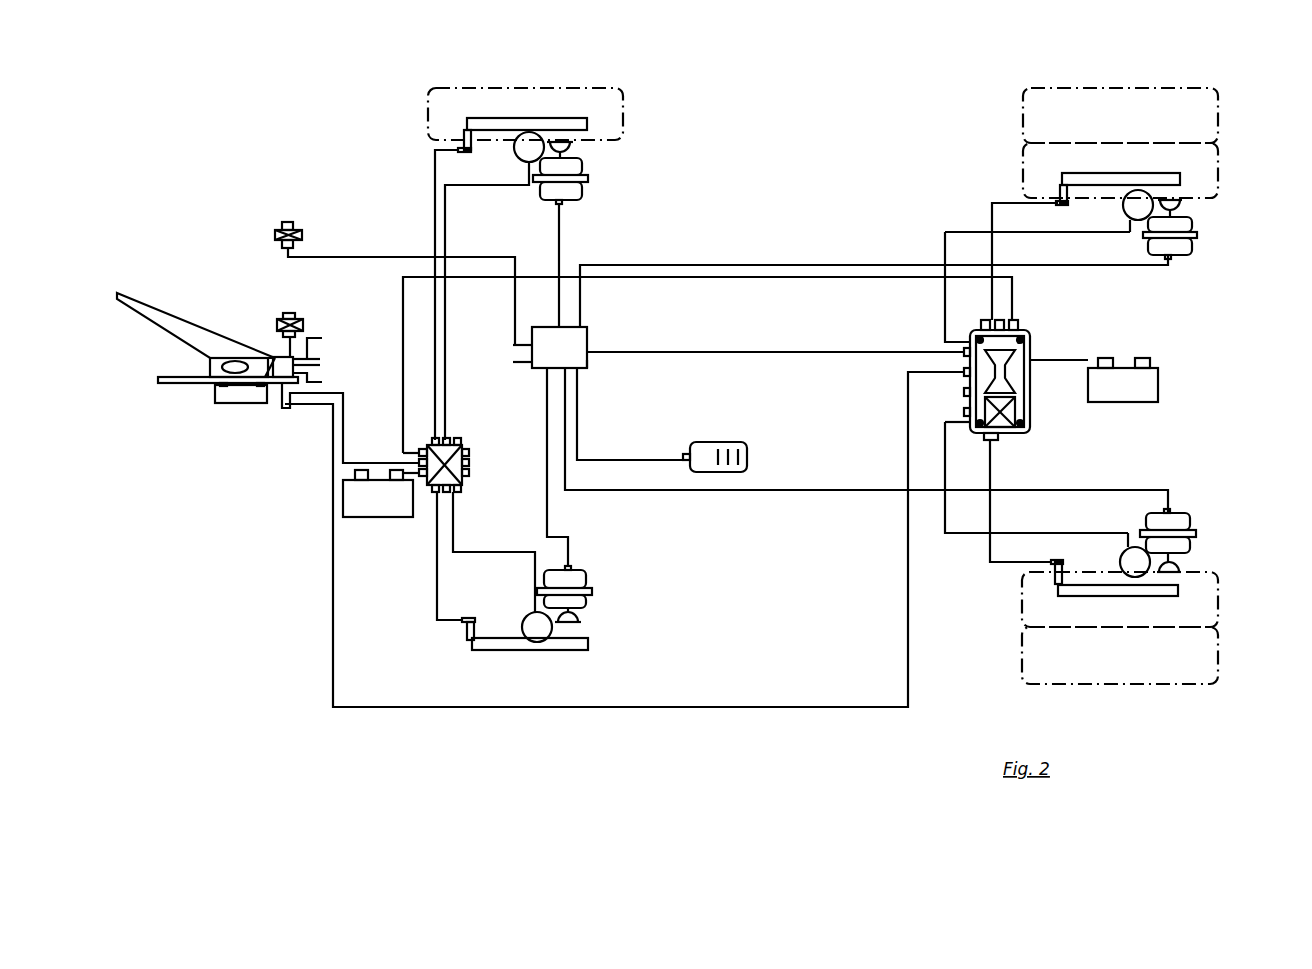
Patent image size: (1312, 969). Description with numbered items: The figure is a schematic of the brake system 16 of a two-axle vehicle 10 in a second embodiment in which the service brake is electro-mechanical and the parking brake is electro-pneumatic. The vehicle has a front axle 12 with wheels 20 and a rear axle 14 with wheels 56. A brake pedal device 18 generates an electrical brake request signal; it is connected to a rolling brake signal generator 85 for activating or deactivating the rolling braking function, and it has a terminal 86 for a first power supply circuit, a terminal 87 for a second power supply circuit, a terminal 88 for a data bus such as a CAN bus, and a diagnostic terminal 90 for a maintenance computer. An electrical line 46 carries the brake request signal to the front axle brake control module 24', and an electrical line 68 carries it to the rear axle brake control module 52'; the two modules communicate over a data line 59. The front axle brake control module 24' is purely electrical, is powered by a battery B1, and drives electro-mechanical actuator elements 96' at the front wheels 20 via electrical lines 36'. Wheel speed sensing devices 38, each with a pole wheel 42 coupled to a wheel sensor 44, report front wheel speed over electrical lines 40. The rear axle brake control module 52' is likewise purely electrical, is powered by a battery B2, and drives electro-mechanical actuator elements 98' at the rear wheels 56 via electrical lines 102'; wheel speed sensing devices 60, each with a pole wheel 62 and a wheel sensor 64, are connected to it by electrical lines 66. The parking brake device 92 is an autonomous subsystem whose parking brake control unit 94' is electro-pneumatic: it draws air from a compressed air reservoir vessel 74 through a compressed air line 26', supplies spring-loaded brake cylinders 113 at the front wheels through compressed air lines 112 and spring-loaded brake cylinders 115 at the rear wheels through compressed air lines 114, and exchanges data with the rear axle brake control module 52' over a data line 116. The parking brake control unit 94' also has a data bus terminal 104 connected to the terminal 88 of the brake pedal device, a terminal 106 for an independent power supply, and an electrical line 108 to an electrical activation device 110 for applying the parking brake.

The two-axle vehicle 10 is at (1256, 113).
The front axle 12 is at (520, 80).
The rear axle 14 is at (1140, 75).
The brake system 16 is at (785, 238).
The brake pedal device 18 is at (205, 398).
The wheels 20 is at (622, 100).
The front axle brake control module 24' is at (462, 468).
The compressed air line 26' is at (630, 414).
The electrical lines 36' is at (490, 387).
The wheel speed sensing devices 38 is at (480, 138).
The electrical lines 40 is at (434, 187).
The pole wheel 42 is at (512, 118).
The wheel sensor 44 is at (464, 128).
The electrical line 46 is at (365, 463).
The rear axle brake control module 52' is at (1016, 380).
The wheels 56 is at (1218, 190).
The data line 59 is at (793, 267).
The wheel speed sensing devices 60 is at (1078, 190).
The pole wheel 62 is at (1142, 173).
The wheel sensor 64 is at (1060, 182).
The electrical lines 66 is at (993, 216).
The electrical line 68 is at (908, 535).
The compressed air reservoir vessel 74 is at (747, 455).
The rolling brake signal generator 85 is at (285, 315).
The terminal 86 is at (322, 338).
The terminal 87 is at (320, 359).
The terminal 88 is at (320, 365).
The diagnostic terminal 90 is at (322, 382).
The parking brake device 92 is at (594, 337).
The parking brake control unit 94' is at (607, 372).
The electro-mechanical actuator elements 96' is at (514, 387).
The electro-mechanical actuator elements 98' is at (1111, 383).
The electrical lines 102' is at (1037, 382).
The terminal 104 is at (513, 362).
The terminal 106 is at (513, 345).
The electrical line 108 is at (367, 257).
The electrical activation device 110 is at (302, 235).
The compressed air lines 112 is at (573, 222).
The spring-loaded brake cylinders 113 is at (552, 196).
The compressed air lines 114 is at (1111, 262).
The spring-loaded brake cylinders 115 is at (1192, 248).
The data line 116 is at (802, 352).
The battery B1 is at (385, 517).
The battery B2 is at (1158, 385).